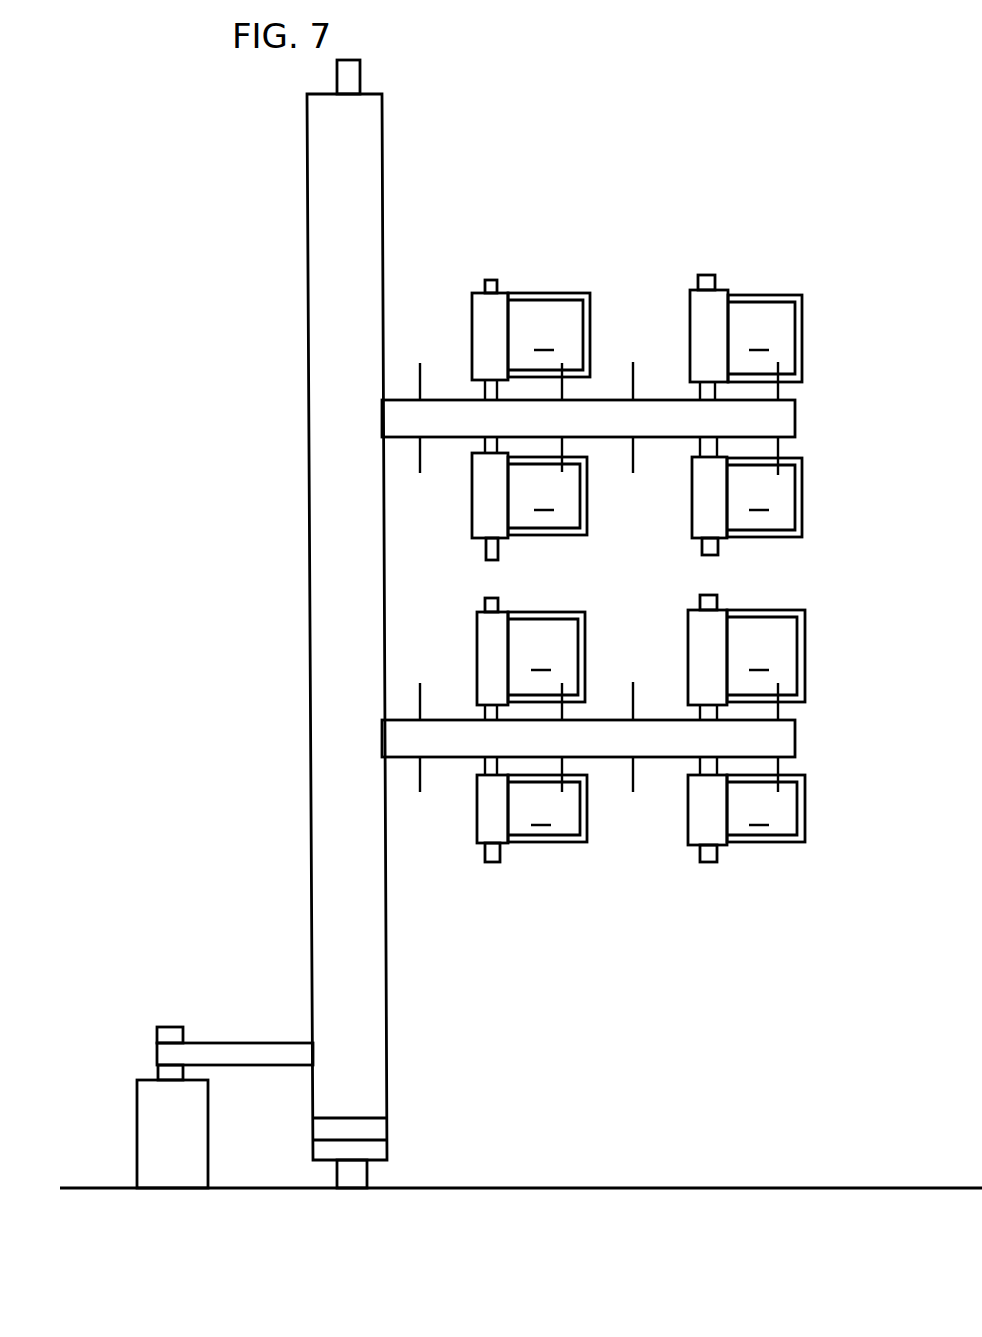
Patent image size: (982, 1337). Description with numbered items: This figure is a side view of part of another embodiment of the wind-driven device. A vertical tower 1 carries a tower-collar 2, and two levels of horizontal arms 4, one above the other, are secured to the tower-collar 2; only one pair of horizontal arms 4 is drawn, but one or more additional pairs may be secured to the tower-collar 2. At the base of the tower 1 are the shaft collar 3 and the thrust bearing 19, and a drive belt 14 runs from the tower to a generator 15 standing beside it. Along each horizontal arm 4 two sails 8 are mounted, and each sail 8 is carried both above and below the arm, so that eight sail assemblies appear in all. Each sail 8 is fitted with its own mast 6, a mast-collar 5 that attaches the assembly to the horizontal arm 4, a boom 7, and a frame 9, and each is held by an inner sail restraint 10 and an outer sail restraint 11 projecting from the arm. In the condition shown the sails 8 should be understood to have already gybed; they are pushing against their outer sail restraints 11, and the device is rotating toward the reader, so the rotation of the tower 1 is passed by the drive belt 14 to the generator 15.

The tower 1 is at (362, 70).
The tower-collar 2 is at (382, 113).
The shaft collar 3 is at (387, 1152).
The horizontal arm 4 is at (408, 420).
The mast-collar 5 is at (465, 300).
The mast 6 is at (490, 282).
The boom 7 is at (523, 370).
The sail 8 is at (650, 575).
The frame 9 is at (538, 293).
The inner sail restraint 10 is at (420, 385).
The outer sail restraint 11 is at (637, 377).
The drive belt 14 is at (372, 1053).
The generator 15 is at (140, 1097).
The thrust bearing 19 is at (387, 1128).